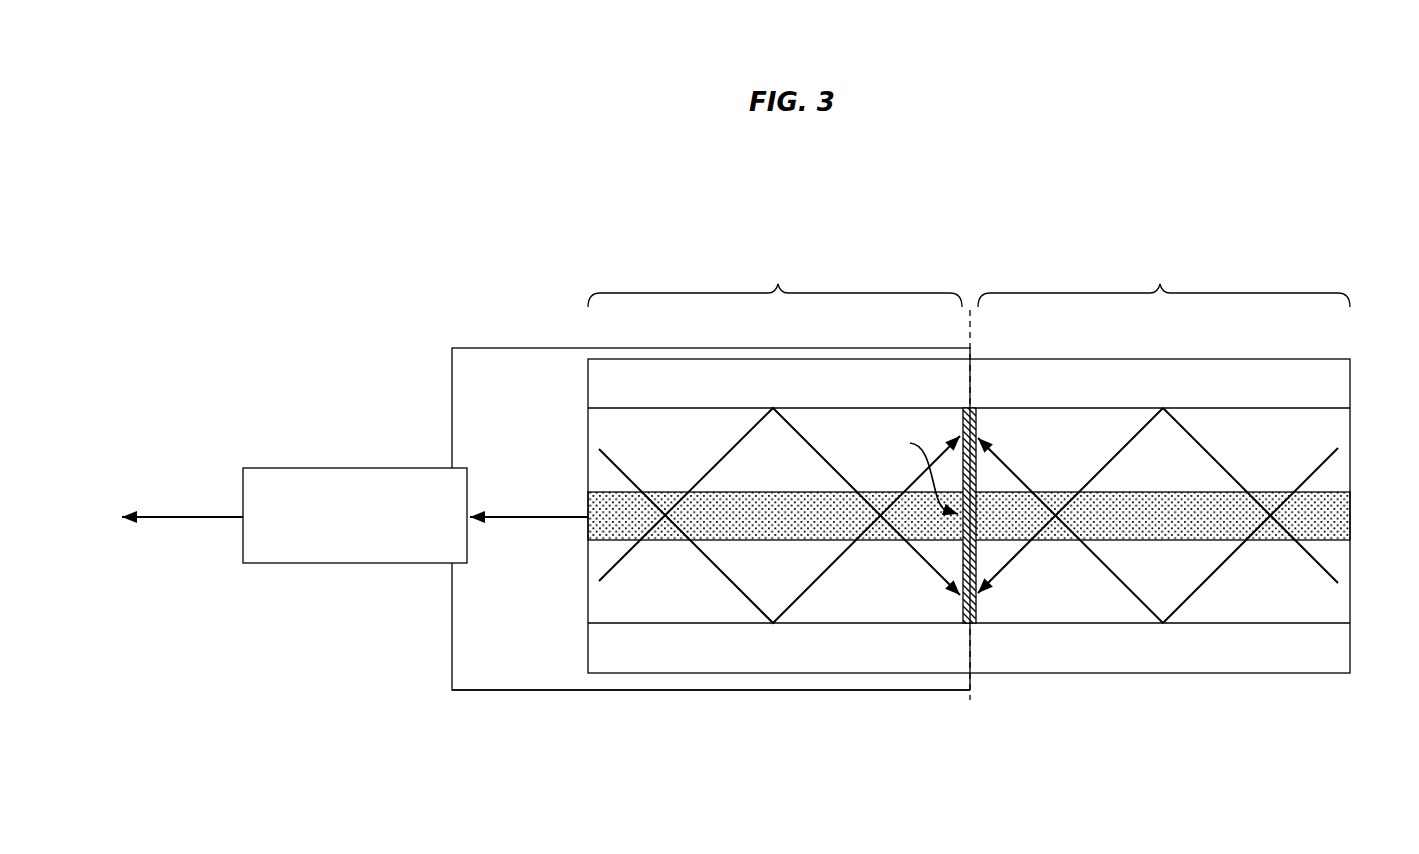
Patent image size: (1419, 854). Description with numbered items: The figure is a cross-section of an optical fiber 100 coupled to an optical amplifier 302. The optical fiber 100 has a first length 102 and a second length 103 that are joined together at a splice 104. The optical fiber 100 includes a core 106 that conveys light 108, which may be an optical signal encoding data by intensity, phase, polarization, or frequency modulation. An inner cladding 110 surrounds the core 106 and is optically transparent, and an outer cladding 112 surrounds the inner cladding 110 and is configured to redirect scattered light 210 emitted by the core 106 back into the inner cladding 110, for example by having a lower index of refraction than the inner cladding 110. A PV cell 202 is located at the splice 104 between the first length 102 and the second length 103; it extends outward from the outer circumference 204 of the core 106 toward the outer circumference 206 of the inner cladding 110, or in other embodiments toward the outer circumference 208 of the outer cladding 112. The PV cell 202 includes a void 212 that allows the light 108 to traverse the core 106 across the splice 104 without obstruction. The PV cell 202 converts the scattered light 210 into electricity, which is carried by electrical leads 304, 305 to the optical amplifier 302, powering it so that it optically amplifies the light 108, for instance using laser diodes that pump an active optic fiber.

The optical fiber 100 is at (1104, 160).
The first length 102 is at (775, 281).
The second length 103 is at (1164, 283).
The splice 104 is at (970, 716).
The core 106 is at (1338, 512).
The light 108 is at (186, 510).
The inner cladding 110 is at (1338, 471).
The outer cladding 112 is at (1338, 378).
The PV cell 202 is at (978, 418).
The outer circumference of core 204 is at (893, 570).
The outer circumference of inner cladding 206 is at (890, 632).
The outer circumference of outer cladding 208 is at (1298, 694).
The scattered light 210 is at (1205, 450).
The void 212 is at (916, 472).
The optical amplifier 302 is at (355, 515).
The electrical lead 304 is at (500, 347).
The electrical lead 305 is at (490, 692).